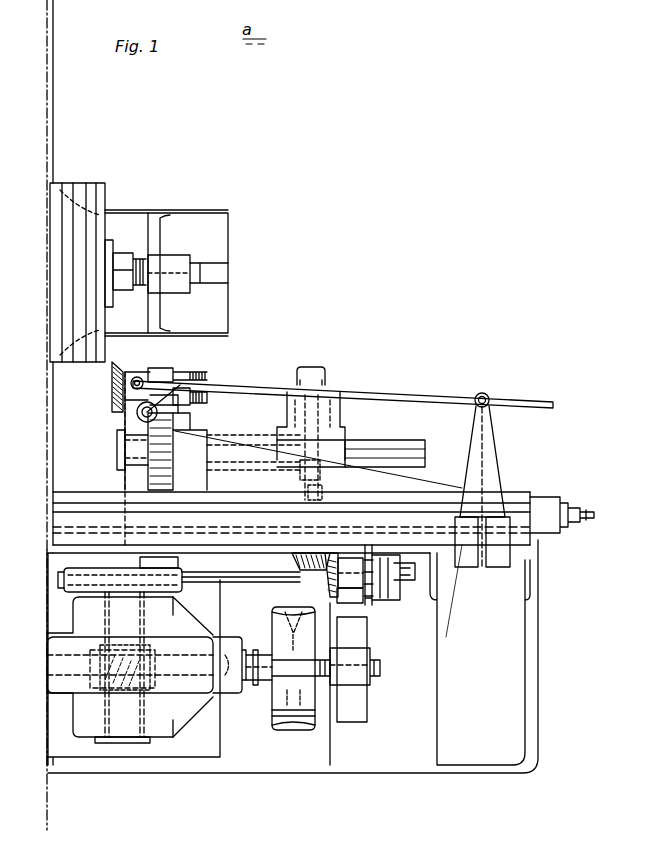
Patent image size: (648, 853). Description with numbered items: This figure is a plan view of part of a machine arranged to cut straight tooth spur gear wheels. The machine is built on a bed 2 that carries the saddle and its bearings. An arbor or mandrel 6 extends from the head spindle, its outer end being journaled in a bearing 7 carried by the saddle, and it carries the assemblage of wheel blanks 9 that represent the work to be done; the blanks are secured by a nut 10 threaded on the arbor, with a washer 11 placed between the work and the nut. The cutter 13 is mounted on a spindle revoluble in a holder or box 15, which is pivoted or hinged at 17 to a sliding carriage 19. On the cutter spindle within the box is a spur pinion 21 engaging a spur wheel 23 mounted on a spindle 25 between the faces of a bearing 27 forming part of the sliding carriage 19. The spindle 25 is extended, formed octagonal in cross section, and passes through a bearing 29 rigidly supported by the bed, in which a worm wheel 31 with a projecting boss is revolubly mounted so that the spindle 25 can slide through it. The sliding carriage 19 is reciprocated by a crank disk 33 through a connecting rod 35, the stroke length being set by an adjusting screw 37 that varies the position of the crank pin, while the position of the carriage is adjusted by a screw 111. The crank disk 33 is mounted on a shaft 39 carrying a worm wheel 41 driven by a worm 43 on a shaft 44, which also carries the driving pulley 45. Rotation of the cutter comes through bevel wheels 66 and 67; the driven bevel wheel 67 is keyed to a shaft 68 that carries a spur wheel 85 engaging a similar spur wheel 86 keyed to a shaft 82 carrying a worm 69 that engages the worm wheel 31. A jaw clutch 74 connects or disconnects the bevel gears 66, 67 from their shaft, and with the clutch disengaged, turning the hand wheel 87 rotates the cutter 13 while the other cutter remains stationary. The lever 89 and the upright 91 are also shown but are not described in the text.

The bed 2 is at (53, 50).
The wheel blanks 9 is at (72, 188).
The washer 11 is at (114, 250).
The nut 10 is at (130, 256).
The bearing 7 is at (183, 256).
The arbor or mandrel 6 is at (203, 270).
The holder or box 15 is at (140, 376).
The spur pinion 21 is at (165, 369).
The lever 89 is at (518, 403).
The cutter 13 is at (112, 388).
The pivot or hinge 17 is at (138, 415).
The sliding carriage 19 is at (191, 451).
The bearing 27 is at (125, 449).
The spur wheel 23 is at (118, 474).
The spur wheel 85 is at (236, 451).
The shaft 68 is at (350, 521).
The worm wheel 31 is at (318, 410).
The bearing 29 is at (286, 428).
The spindle 25 is at (425, 445).
The worm 69 is at (355, 446).
The shaft 82 is at (322, 471).
The spur wheel 86 is at (322, 495).
The column 91 is at (492, 466).
The screw 111 is at (578, 524).
The crank disk 33 is at (120, 568).
The adjusting screw 37 is at (186, 572).
The connecting rod 35 is at (265, 553).
The shaft 39 is at (98, 612).
The worm 43 is at (112, 672).
The worm wheel 41 is at (185, 700).
The shaft 44 is at (265, 680).
The driving pulley 45 is at (292, 730).
The bevel wheel 67 is at (298, 570).
The bevel wheel 66 is at (332, 592).
The jaw clutch 74 is at (375, 598).
The hand wheel 87 is at (369, 606).